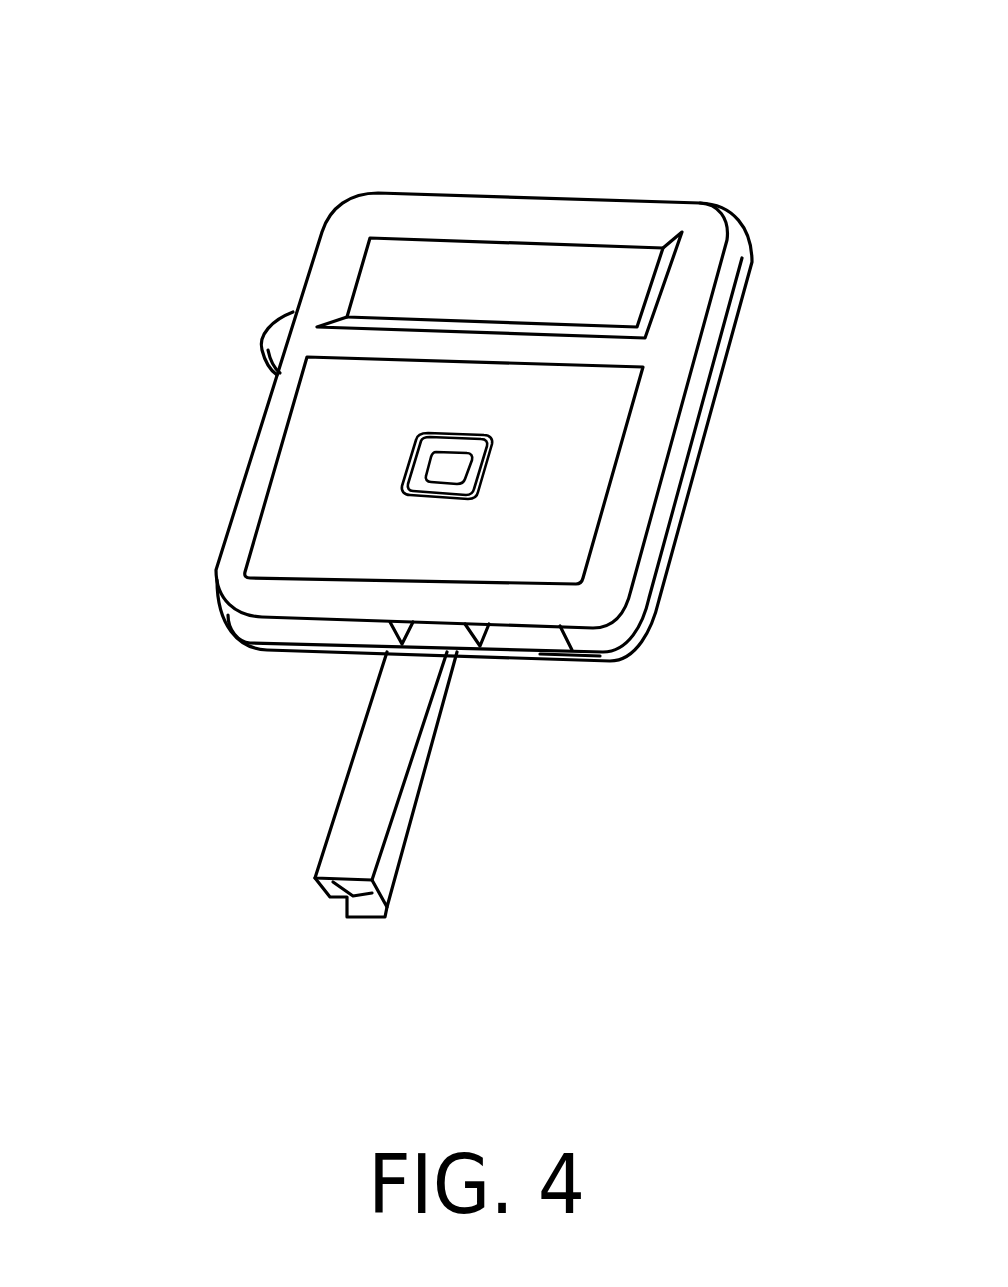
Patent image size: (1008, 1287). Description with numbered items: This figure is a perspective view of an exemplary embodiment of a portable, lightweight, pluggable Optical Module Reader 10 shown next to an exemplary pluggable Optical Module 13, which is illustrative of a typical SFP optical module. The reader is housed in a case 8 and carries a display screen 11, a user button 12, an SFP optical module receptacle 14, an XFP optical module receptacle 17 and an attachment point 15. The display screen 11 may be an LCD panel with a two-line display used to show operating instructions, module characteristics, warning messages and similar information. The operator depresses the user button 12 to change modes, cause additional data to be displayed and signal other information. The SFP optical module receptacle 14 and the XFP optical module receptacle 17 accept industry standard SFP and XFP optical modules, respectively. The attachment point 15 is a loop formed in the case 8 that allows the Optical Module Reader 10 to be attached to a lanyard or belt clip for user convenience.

The case 8 is at (707, 442).
The Optical Module Reader 10 is at (469, 458).
The display screen 11 is at (390, 298).
The user button 12 is at (393, 480).
The pluggable Optical Module 13 is at (377, 785).
The SFP optical module receptacle 14 is at (460, 650).
The attachment point 15 is at (263, 343).
The XFP optical module receptacle 17 is at (512, 643).